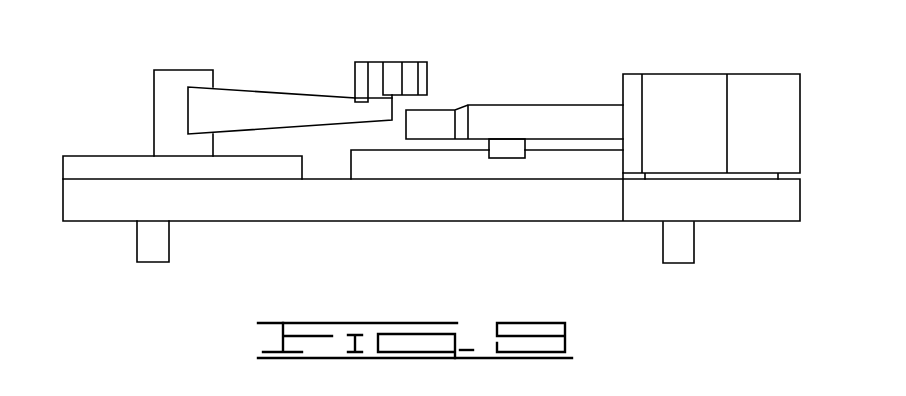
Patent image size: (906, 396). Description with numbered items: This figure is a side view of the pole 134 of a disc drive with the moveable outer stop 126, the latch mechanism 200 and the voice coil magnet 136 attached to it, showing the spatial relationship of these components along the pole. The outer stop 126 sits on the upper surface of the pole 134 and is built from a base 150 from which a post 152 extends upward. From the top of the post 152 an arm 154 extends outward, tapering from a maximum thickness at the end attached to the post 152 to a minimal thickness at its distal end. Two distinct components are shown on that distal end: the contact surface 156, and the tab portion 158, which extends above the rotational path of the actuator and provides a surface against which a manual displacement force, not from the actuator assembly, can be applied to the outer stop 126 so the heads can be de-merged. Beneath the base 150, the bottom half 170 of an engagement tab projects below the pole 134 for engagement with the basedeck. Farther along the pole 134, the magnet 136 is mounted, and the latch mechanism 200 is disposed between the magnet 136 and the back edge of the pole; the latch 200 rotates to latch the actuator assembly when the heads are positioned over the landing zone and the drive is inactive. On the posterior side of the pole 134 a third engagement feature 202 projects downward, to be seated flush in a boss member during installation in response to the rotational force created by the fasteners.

The outer stop 126 is at (277, 85).
The pole 134 is at (505, 209).
The magnet 136 is at (373, 160).
The base portion 150 is at (110, 155).
The post 152 is at (172, 78).
The arm 154 is at (235, 102).
The contact surface 156 is at (378, 108).
The tab portion 158 is at (427, 77).
The bottom half of engagement tab 170 is at (170, 242).
The latch mechanism 200 is at (760, 92).
The third engagement feature 202 is at (694, 243).